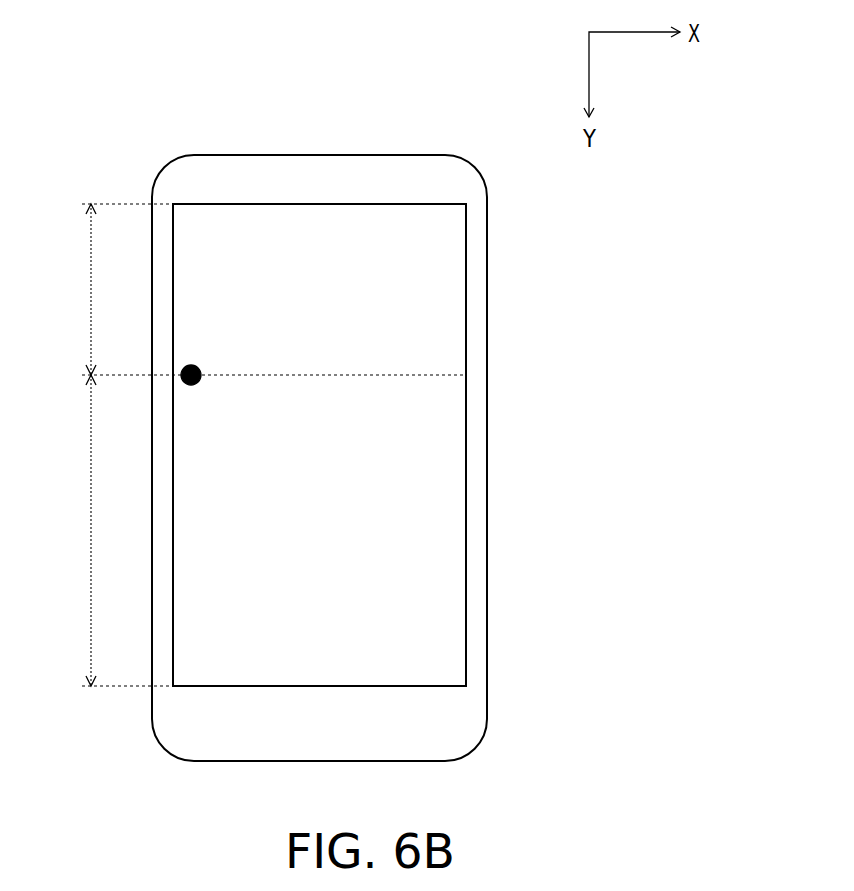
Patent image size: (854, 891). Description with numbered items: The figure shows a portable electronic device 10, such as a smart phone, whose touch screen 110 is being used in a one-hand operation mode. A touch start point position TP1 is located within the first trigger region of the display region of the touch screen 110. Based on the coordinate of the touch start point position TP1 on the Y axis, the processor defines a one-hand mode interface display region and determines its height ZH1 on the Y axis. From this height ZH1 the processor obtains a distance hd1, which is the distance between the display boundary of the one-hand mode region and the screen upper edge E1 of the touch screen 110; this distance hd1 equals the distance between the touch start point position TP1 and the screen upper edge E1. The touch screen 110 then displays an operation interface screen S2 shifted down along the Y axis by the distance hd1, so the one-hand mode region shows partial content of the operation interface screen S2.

The portable electronic device 10 is at (292, 155).
The touch screen 110 is at (381, 204).
The screen upper edge E1 is at (224, 204).
The touch start point position TP1 is at (200, 367).
The operation interface screen S2 is at (410, 585).
The distance hd1 is at (109, 289).
The height ZH1 is at (109, 530).